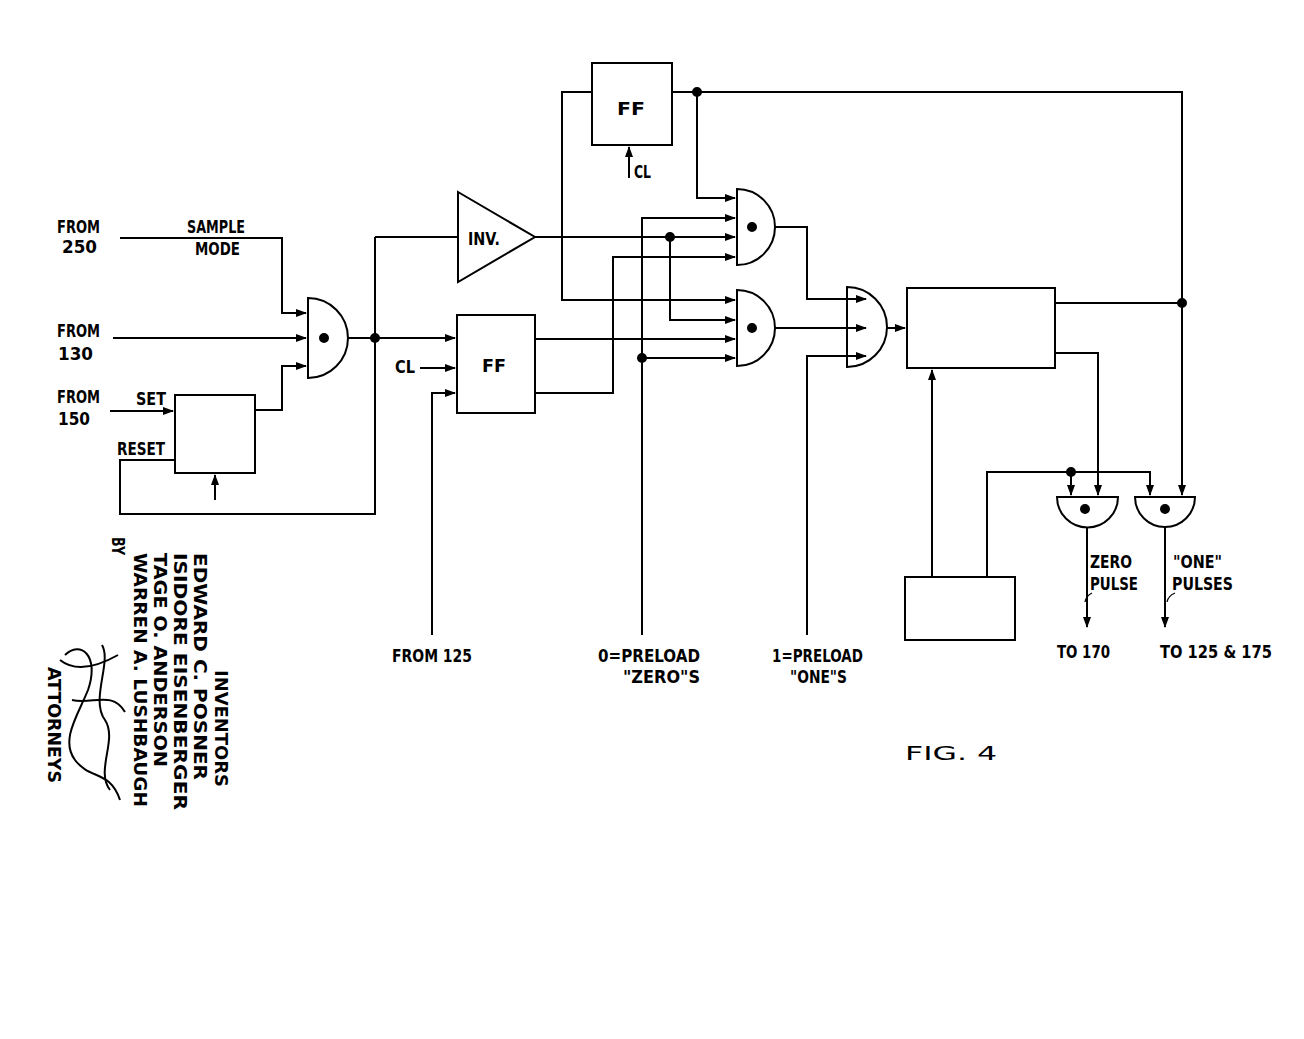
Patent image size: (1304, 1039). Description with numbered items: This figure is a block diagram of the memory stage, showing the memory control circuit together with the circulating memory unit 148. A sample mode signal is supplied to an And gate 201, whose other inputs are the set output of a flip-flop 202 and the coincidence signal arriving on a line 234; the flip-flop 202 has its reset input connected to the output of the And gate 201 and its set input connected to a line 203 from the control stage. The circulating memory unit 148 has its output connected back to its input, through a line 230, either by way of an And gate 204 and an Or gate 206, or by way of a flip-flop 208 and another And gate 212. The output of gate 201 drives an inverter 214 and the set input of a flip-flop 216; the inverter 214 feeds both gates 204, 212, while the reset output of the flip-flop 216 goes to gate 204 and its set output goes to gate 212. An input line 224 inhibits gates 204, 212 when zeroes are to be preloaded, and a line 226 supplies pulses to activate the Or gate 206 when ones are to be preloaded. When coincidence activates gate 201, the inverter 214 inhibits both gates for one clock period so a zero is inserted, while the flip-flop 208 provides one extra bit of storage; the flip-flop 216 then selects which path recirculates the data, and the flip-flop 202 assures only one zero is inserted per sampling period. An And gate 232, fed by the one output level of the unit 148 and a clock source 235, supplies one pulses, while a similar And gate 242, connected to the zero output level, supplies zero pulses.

The And gate 201 is at (316, 302).
The flip-flop 202 is at (257, 460).
The line 203 is at (114, 410).
The line 234 is at (248, 342).
The inverter 214 is at (466, 196).
The flip-flop 216 is at (487, 316).
The flip-flop 208 is at (635, 63).
The And gate 204 is at (745, 190).
The And gate 212 is at (758, 310).
The Or gate 206 is at (848, 286).
The line 230 is at (870, 92).
The circulating memory unit 148 is at (1003, 287).
The input line 224 is at (642, 502).
The line 226 is at (807, 502).
The clock source 235 is at (987, 578).
The And gate 242 is at (1057, 500).
The And gate 232 is at (1195, 500).